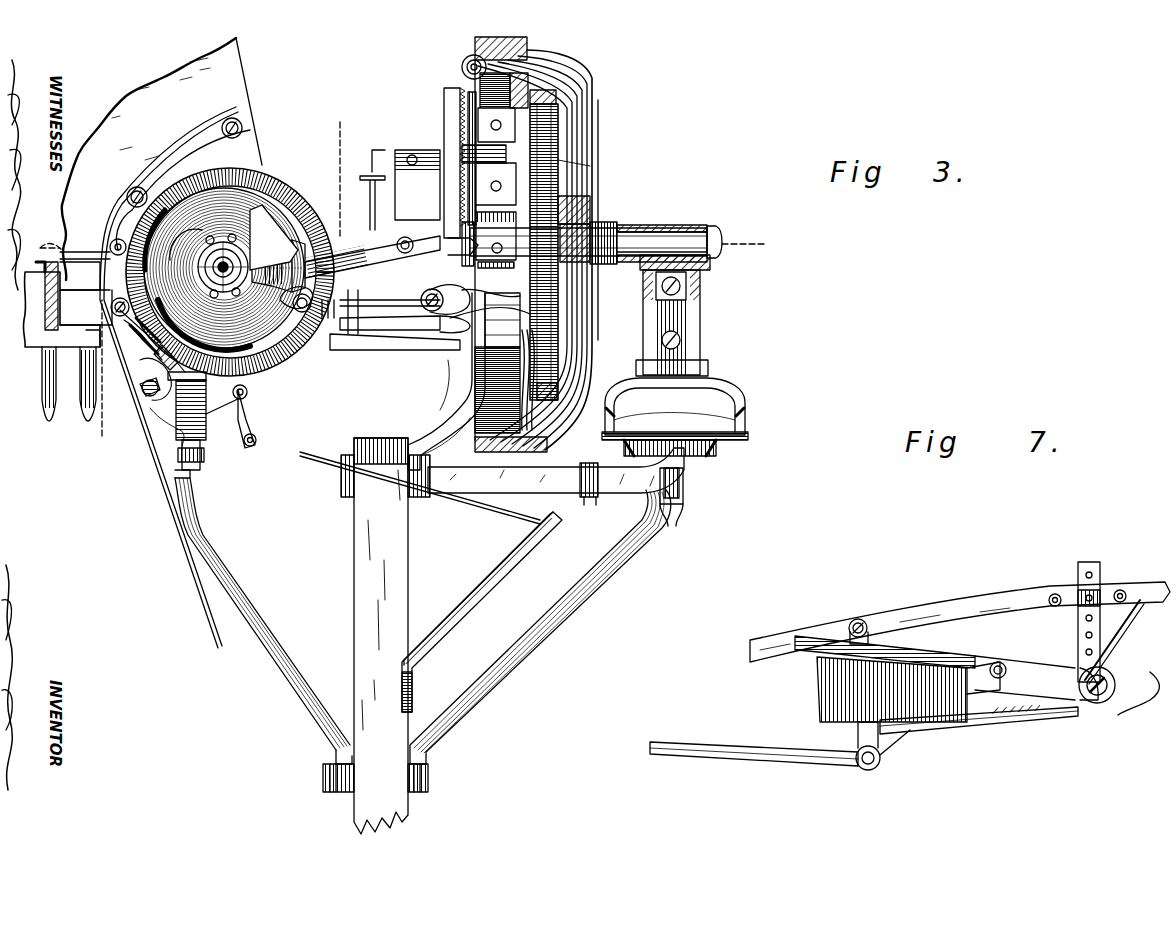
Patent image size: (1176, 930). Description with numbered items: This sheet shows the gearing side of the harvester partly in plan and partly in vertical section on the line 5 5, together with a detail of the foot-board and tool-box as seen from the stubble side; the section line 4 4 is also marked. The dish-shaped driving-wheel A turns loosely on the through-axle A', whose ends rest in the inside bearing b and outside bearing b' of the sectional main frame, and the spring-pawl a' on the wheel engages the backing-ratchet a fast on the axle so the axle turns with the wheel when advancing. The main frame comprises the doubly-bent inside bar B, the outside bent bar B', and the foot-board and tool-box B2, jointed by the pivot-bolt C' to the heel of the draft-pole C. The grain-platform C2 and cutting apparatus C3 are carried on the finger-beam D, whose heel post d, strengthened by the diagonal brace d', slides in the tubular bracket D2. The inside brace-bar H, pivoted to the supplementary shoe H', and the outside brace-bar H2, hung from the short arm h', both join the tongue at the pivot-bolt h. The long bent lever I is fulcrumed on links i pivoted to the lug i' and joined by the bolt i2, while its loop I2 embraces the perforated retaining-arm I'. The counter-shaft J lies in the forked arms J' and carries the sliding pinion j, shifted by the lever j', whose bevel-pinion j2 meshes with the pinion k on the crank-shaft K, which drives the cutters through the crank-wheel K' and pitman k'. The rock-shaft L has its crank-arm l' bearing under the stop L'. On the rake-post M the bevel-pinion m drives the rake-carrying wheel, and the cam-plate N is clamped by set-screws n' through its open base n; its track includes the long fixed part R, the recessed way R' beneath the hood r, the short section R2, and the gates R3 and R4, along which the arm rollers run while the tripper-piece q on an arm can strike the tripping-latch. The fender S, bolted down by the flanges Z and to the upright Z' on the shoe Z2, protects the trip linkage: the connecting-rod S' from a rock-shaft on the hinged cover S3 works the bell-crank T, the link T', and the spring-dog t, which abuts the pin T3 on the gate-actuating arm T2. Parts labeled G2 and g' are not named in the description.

In FIG. 3, the driving and main supporting wheel A is at (530, 244).
In FIG. 3, the main through-axle A' is at (662, 230).
In FIG. 3, the backing-ratchet a is at (537, 262).
In FIG. 3, the spring-pawl a' is at (588, 233).
In FIG. 3, the angle-plate or doubly-bent bar B is at (446, 381).
In FIG. 3, the outside bent bar B' is at (556, 470).
In FIG. 7, the outside bent bar B' is at (1019, 717).
In FIG. 3, the foot-board and tool-box B2 is at (681, 345).
In FIG. 7, the foot-board and tool-box B2 is at (1045, 679).
In FIG. 3, the inside bearing b is at (491, 290).
In FIG. 3, the outside bearing b' is at (708, 228).
In FIG. 3, the tongue or draft-pole C is at (381, 636).
In FIG. 3, the pivot-bolt C' is at (370, 482).
In FIG. 3, the grain-platform C2 is at (162, 159).
In FIG. 3, the cutting apparatus C3 is at (69, 389).
In FIG. 3, the finger-beam D is at (195, 304).
In FIG. 3, the sleeve-bearing or tubular bracket D2 is at (430, 296).
In FIG. 3, the post d is at (390, 322).
In FIG. 3, the diagonal brace d' is at (361, 317).
In FIG. 3, the link G2 is at (490, 315).
In FIG. 3, the lever g' is at (432, 385).
In FIG. 3, the diagonal brace-bar H is at (263, 617).
In FIG. 3, the supplementary shoe H' is at (202, 425).
In FIG. 3, the outside brace-bar H2 is at (572, 626).
In FIG. 7, the outside brace-bar H2 is at (720, 754).
In FIG. 3, the pivot-bolt h is at (367, 780).
In FIG. 3, the down-hanger or short arm h' is at (685, 494).
In FIG. 7, the down-hanger or short arm h' is at (883, 755).
In FIG. 3, the bent lever I is at (482, 612).
In FIG. 7, the bent lever I is at (960, 622).
In FIG. 3, the retaining-arm I' is at (662, 227).
In FIG. 7, the retaining-arm I' is at (1114, 618).
In FIG. 7, the loop I2 is at (1082, 582).
In FIG. 3, the links i is at (582, 470).
In FIG. 7, the links i is at (849, 621).
In FIG. 3, the lug i' is at (589, 511).
In FIG. 7, the lug i' is at (903, 689).
In FIG. 7, the bolt i2 is at (862, 620).
In FIG. 3, the counter-shaft J is at (496, 235).
In FIG. 3, the forked rear arms of main frame J' is at (417, 185).
In FIG. 3, the endwise-moving pinion j is at (574, 252).
In FIG. 3, the shifting-clutch lever j' is at (462, 61).
In FIG. 3, the bevel-pinion j2 is at (446, 92).
In FIG. 3, the crank-shaft K is at (485, 230).
In FIG. 3, the crank-wheel K' is at (405, 331).
In FIG. 3, the pinion k is at (445, 228).
In FIG. 3, the pitman k' is at (395, 360).
In FIG. 3, the rock-shaft L is at (93, 243).
In FIG. 3, the stop or short arm L' is at (368, 188).
In FIG. 3, the crank-arm l' is at (378, 187).
In FIG. 3, the rake-post or standard M is at (372, 249).
In FIG. 3, the bevel-pinion m is at (278, 259).
In FIG. 3, the controlling-cam or rake-track plate N is at (230, 262).
In FIG. 3, the centrally-open base n is at (223, 268).
In FIG. 3, the set-screws n' is at (186, 236).
In FIG. 3, the tripper-piece q is at (86, 335).
In FIG. 3, the main fixed track R is at (237, 266).
In FIG. 3, the recessed walled part R' is at (238, 299).
In FIG. 3, the short fixed part R2 is at (112, 222).
In FIG. 3, the front cam-latch or gate R3 is at (80, 275).
In FIG. 3, the rear gate R4 is at (232, 140).
In FIG. 3, the top wall or hood r is at (335, 323).
In FIG. 3, the inner fence or fender S is at (169, 377).
In FIG. 3, the connecting-rod or link S' is at (420, 490).
In FIG. 3, the hinged foot-board or cover S3 is at (748, 420).
In FIG. 7, the hinged foot-board or cover S3 is at (885, 650).
In FIG. 3, the bell-crank lever T is at (213, 410).
In FIG. 3, the short link-rod T' is at (152, 354).
In FIG. 3, the cam-gate-actuating arm T2 is at (98, 300).
In FIG. 3, the pin or lug T3 is at (140, 390).
In FIG. 3, the trip-arm or spring-dog t is at (223, 402).
In FIG. 3, the lugs or base-flanges Z is at (167, 246).
In FIG. 3, the upright Z' is at (139, 409).
In FIG. 3, the shoe Z2 is at (150, 450).
In FIG. 3, the section line 4 4 is at (219, 280).
In FIG. 3, the section line 5 5 is at (399, 245).